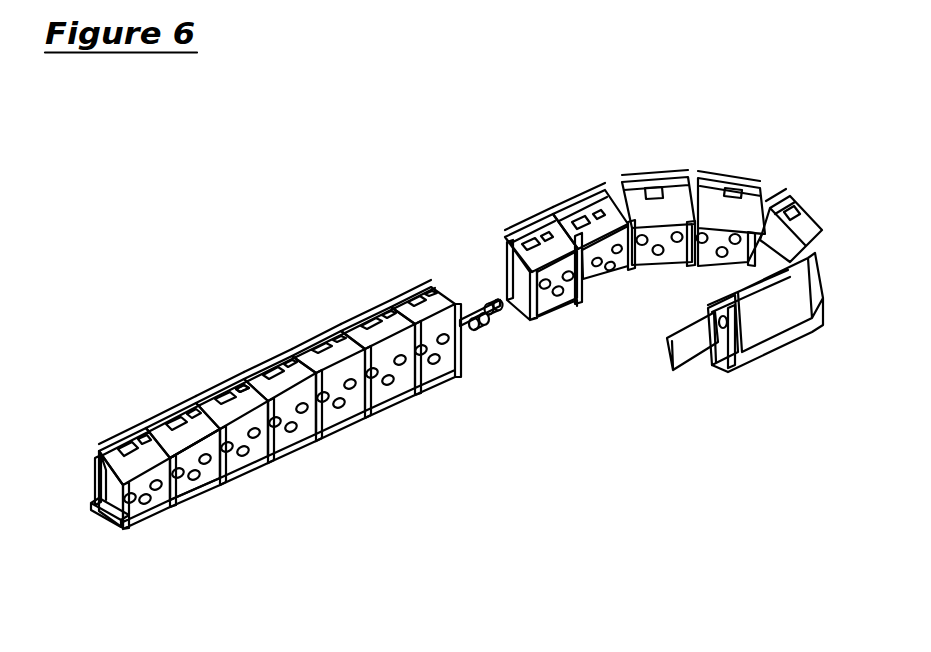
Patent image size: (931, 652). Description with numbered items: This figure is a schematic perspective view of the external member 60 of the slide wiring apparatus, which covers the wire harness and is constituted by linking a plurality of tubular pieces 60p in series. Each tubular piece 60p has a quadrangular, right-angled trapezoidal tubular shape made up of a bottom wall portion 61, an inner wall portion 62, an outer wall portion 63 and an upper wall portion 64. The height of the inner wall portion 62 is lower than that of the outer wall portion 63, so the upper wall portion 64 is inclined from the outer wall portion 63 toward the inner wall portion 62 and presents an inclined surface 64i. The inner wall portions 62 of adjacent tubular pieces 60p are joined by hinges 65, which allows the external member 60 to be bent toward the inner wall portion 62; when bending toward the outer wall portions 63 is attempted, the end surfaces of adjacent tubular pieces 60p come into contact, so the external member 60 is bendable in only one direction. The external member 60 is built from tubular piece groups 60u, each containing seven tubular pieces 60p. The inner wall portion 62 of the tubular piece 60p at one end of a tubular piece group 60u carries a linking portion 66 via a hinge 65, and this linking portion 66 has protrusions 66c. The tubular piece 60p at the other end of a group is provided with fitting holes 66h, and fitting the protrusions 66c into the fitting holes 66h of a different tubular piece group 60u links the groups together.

The external member 60 is at (234, 163).
The tubular piece group 60u is at (196, 397).
The tubular piece 60p is at (283, 385).
The bottom wall portion 61 is at (98, 514).
The inner wall portion 62 is at (142, 508).
The outer wall portion 63 is at (104, 457).
The upper wall portion 64 is at (190, 472).
The inclined surface 64i is at (545, 237).
The hinge 65 is at (276, 450).
The linking portion 66 is at (476, 307).
The protrusion 66c is at (492, 336).
The fitting hole 66h is at (569, 306).